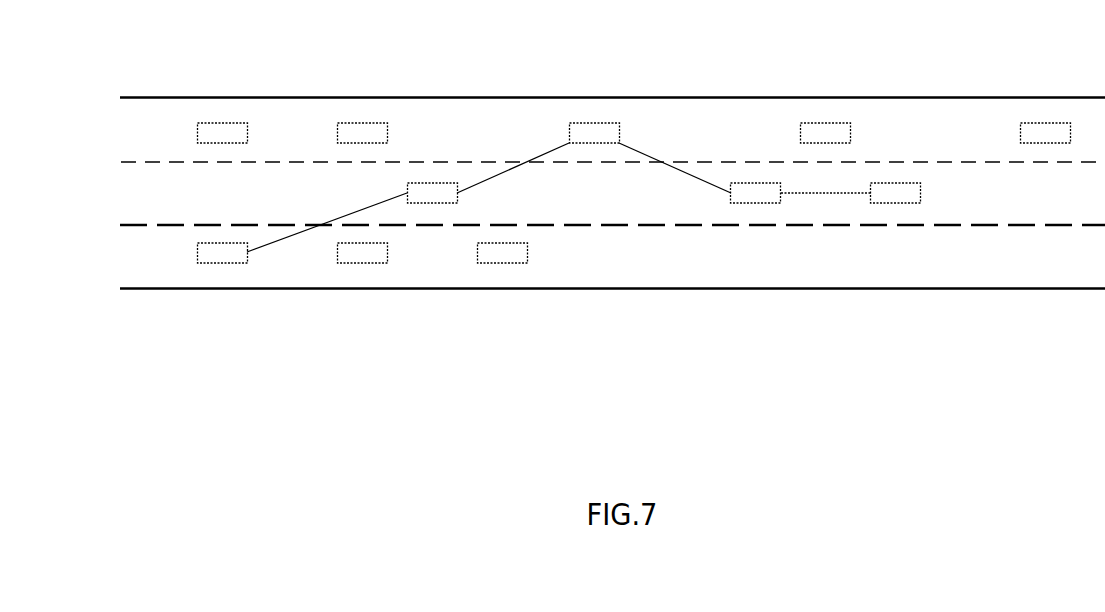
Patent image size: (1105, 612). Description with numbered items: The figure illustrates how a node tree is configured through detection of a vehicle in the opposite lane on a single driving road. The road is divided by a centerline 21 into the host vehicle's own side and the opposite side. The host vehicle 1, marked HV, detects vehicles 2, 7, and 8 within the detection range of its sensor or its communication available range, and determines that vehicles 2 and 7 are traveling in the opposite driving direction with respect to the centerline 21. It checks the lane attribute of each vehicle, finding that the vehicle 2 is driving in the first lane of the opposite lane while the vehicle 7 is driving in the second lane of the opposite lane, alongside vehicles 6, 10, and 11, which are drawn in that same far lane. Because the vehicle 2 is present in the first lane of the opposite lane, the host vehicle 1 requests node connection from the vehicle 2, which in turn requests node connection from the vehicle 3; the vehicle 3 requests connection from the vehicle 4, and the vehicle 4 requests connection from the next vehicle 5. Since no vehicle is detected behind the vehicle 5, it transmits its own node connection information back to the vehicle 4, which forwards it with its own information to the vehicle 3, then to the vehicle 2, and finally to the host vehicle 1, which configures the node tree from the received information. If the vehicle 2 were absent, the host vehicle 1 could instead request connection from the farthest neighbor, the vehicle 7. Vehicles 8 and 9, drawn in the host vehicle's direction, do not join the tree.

The host vehicle 1 is at (223, 266).
The vehicle 2 is at (433, 193).
The vehicle 3 is at (595, 133).
The vehicle 4 is at (756, 193).
The vehicle 5 is at (896, 193).
The vehicle 6 is at (223, 133).
The vehicle 7 is at (363, 133).
The vehicle 8 is at (363, 253).
The vehicle 9 is at (503, 253).
The vehicle 10 is at (826, 139).
The vehicle 11 is at (1046, 139).
The centerline 21 is at (622, 97).